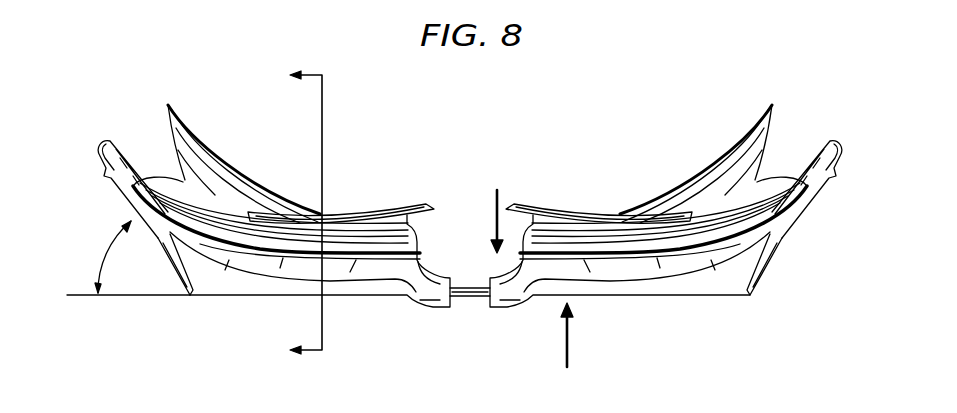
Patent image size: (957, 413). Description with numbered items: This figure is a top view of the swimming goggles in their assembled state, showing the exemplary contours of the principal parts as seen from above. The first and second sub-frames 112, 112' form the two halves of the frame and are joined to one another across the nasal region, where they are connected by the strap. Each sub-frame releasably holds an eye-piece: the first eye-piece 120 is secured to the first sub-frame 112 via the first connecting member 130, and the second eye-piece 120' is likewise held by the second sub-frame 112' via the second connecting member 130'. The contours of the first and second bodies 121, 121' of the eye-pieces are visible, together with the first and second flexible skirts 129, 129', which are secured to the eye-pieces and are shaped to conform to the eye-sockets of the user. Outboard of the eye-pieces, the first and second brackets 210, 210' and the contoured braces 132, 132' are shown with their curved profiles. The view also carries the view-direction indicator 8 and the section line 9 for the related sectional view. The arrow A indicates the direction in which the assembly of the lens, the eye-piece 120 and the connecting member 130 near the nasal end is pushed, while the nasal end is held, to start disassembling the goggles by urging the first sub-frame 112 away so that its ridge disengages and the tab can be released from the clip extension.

The first sub-frame 112 is at (630, 282).
The second sub-frame 112' is at (330, 281).
The first eye-piece 120 is at (599, 174).
The second eye-piece 120' is at (341, 174).
The first body 121 is at (669, 184).
The second body 121' is at (270, 182).
The first flexible skirt 129 is at (696, 155).
The second flexible skirt 129' is at (244, 153).
The first connecting member 130 is at (663, 214).
The second connecting member 130' is at (276, 211).
The first contoured brace 132 is at (785, 259).
The second contoured brace 132' is at (157, 260).
The first bracket 210 is at (825, 189).
The second bracket 210' is at (115, 189).
The view direction arrow 8 is at (498, 210).
The section line 9- 9 is at (308, 214).
The arrow A is at (569, 350).